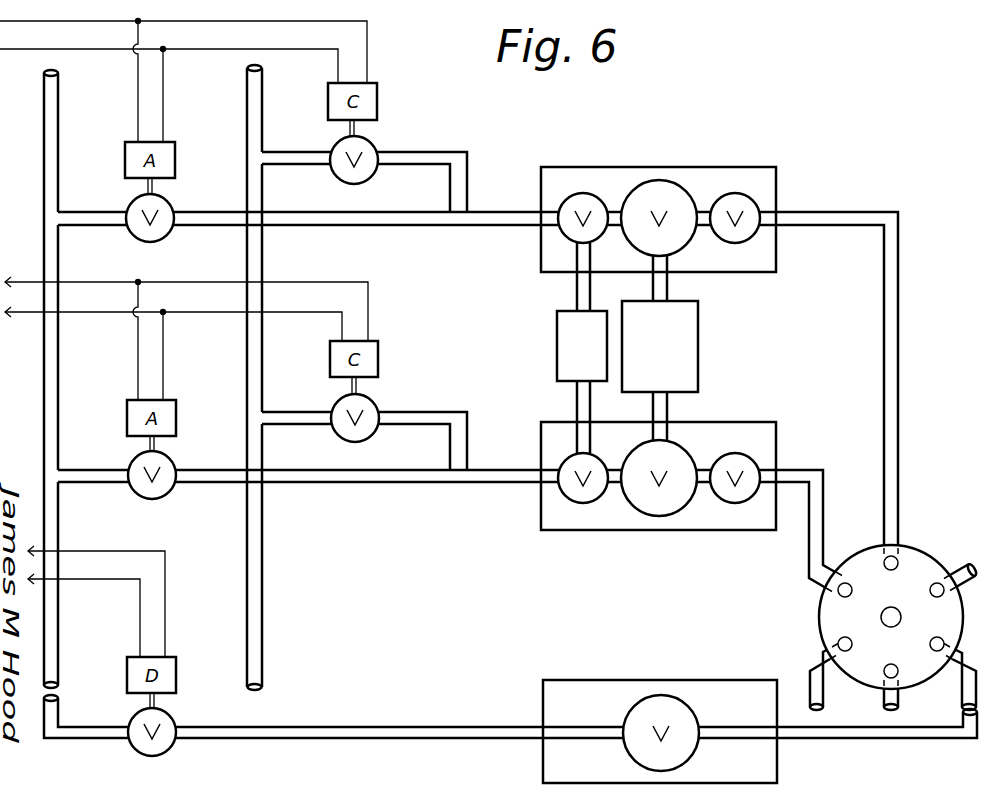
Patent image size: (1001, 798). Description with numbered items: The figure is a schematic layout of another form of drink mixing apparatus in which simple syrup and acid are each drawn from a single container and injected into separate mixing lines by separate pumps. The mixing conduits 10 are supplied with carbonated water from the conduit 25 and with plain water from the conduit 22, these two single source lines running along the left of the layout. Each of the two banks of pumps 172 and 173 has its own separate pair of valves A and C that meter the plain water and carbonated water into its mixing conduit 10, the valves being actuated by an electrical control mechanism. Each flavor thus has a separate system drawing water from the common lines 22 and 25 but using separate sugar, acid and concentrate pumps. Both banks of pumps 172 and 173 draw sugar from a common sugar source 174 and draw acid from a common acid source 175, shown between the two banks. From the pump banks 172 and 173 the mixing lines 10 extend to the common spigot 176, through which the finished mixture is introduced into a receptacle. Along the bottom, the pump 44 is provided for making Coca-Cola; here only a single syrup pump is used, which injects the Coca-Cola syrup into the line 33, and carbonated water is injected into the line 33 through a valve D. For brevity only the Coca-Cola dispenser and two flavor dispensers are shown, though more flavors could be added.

The mixing conduit 10 is at (497, 209).
The plain water conduit 22 is at (247, 139).
The carbonated water conduit 25 is at (44, 358).
The line 33 is at (397, 726).
The pump 44 is at (574, 679).
The bank of pumps 172 is at (730, 166).
The bank of pumps 173 is at (749, 421).
The sugar source 174 is at (688, 330).
The acid source 175 is at (557, 343).
The spigot 176 is at (932, 558).